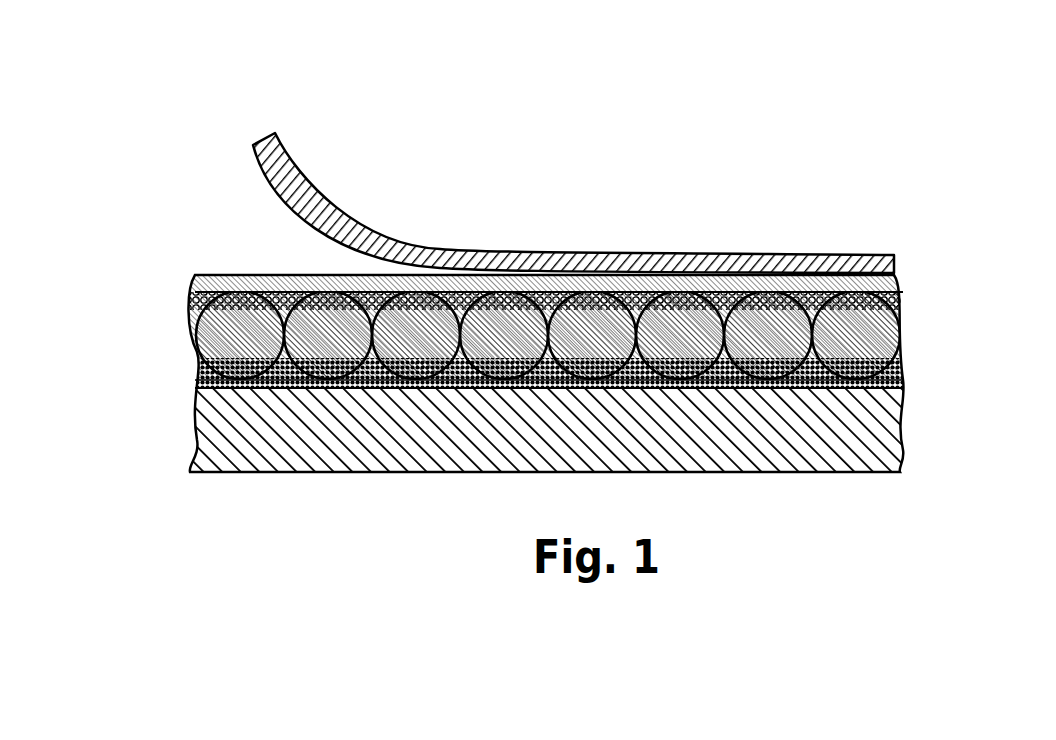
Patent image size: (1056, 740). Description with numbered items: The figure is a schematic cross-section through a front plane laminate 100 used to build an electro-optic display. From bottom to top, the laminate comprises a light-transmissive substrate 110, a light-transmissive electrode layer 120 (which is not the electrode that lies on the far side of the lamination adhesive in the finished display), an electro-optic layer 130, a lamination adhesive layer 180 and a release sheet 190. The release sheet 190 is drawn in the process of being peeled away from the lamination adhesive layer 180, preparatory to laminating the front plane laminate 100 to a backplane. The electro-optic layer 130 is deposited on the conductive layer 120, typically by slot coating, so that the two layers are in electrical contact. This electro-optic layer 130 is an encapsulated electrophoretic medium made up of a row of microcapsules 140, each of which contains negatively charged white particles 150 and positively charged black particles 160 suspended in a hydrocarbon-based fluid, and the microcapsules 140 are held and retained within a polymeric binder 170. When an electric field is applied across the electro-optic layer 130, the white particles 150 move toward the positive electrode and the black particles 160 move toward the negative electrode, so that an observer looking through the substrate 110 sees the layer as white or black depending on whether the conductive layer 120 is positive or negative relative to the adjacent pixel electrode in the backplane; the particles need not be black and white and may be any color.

The front plane laminate 100 is at (377, 180).
The light-transmissive substrate 110 is at (863, 435).
The light-transmissive electrode layer 120 is at (907, 383).
The electro-optic layer 130 is at (545, 304).
The microcapsules 140 is at (203, 335).
The white particles 150 is at (188, 291).
The black particles 160 is at (192, 385).
The polymeric binder 170 is at (895, 308).
The lamination adhesive layer 180 is at (270, 276).
The release sheet 190 is at (566, 256).